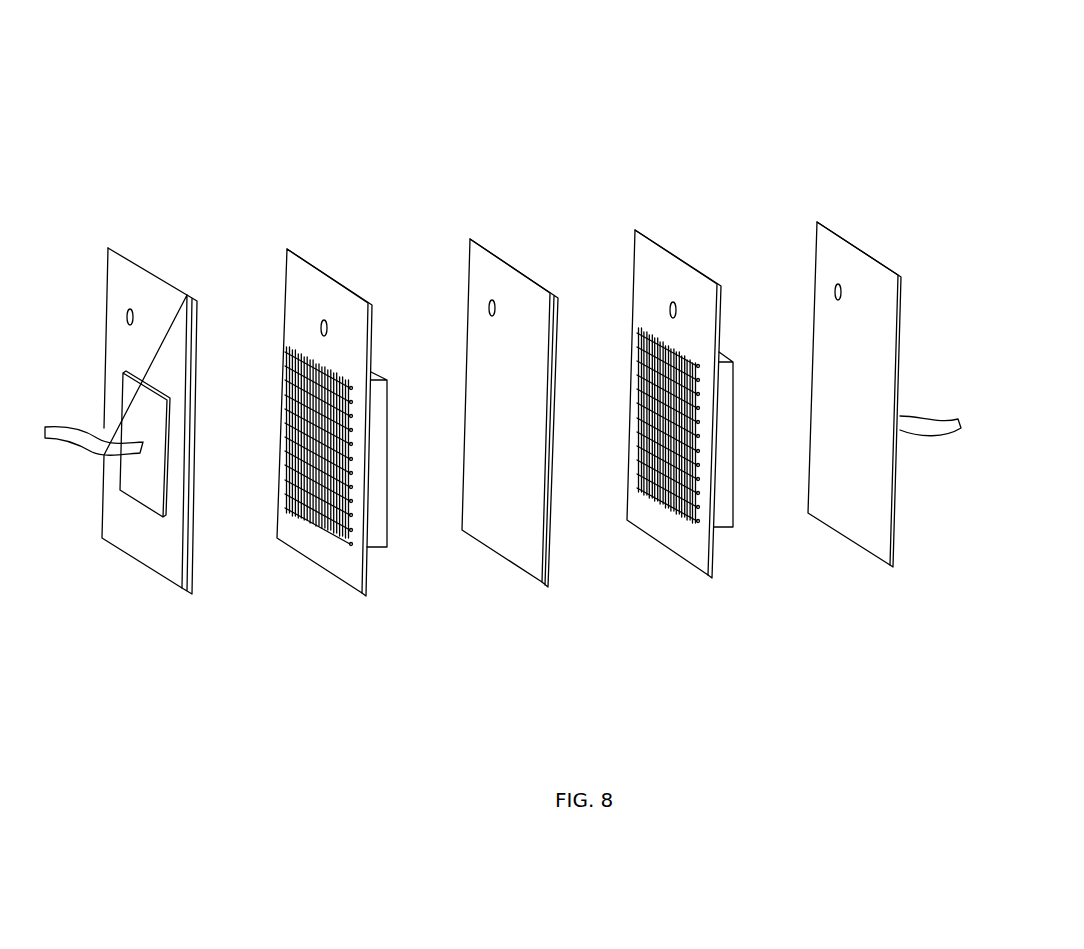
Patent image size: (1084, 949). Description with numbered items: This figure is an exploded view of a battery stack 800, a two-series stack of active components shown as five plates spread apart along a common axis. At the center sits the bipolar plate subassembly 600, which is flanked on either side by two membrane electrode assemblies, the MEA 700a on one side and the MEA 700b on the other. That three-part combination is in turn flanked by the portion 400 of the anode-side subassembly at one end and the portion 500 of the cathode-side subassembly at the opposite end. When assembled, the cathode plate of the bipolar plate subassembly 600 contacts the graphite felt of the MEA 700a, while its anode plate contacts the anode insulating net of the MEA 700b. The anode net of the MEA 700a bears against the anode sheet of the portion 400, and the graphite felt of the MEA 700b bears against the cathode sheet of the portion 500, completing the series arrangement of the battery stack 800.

The battery stack 800 is at (380, 69).
The portion of the anode-side subassembly 400 is at (131, 257).
The MEA 700a is at (308, 261).
The bipolar plate subassembly 600 is at (491, 252).
The MEA 700b is at (672, 256).
The portion of the cathode-side subassembly 500 is at (863, 253).